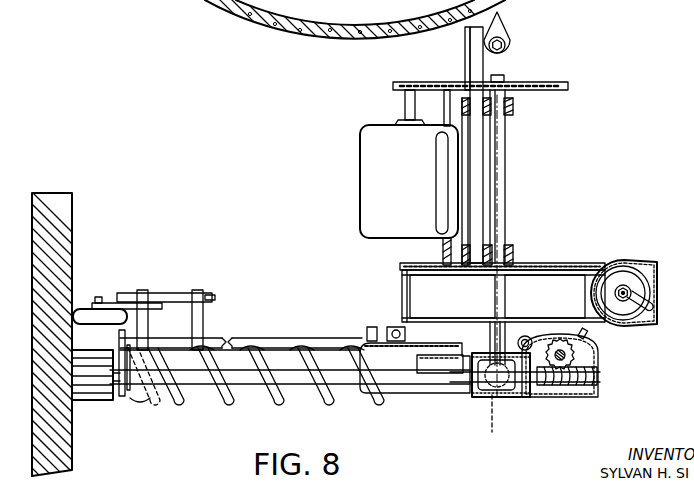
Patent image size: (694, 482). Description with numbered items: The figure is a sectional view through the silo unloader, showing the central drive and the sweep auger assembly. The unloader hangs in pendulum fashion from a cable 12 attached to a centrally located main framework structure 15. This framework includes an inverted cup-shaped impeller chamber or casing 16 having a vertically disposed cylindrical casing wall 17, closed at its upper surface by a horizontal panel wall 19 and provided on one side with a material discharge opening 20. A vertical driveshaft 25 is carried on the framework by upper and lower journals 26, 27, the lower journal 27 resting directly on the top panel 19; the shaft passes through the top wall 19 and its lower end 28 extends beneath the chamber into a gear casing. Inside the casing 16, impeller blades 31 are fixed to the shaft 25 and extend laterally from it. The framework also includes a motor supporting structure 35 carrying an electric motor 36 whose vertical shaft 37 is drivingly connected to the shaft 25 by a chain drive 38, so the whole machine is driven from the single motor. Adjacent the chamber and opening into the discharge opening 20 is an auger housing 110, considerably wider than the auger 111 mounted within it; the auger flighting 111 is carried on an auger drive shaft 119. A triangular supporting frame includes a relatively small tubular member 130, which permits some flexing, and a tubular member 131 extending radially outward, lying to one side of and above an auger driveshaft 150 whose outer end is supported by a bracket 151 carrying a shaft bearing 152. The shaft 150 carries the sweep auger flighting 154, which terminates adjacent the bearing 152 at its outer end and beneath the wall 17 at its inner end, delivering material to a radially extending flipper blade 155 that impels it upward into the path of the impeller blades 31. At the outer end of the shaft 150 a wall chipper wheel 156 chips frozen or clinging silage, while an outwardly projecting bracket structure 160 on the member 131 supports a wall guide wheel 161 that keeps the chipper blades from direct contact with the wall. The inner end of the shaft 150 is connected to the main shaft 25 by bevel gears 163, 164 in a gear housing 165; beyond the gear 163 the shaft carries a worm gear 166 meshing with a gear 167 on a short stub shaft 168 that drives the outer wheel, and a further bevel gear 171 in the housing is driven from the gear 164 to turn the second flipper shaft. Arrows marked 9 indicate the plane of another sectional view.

The section line 9- 9 is at (485, 237).
The cable 12 is at (503, 18).
The main framework structure 15 is at (482, 67).
The impeller chamber 16 is at (558, 258).
The cylindrical casing wall 17 is at (404, 302).
The panel wall 19 is at (425, 264).
The material discharge opening 20 is at (593, 300).
The driveshaft 25 is at (498, 170).
The upper journal 26 is at (514, 108).
The lower journal 27 is at (514, 256).
The lower end of the shaft 28 is at (493, 336).
The impeller blades 31 is at (420, 283).
The motor supporting structure 35 is at (449, 105).
The electric motor 36 is at (372, 170).
The vertical shaft 37 is at (406, 103).
The chain drive 38 is at (442, 83).
The auger housing 110 is at (658, 295).
The auger 111 is at (637, 285).
The auger drive shaft 119 is at (638, 306).
The tubular member 130 is at (525, 336).
The tubular member 131 is at (273, 347).
The auger driveshaft 150 is at (478, 384).
The bracket 151 is at (121, 344).
The shaft bearing 152 is at (128, 374).
The auger flighting 154 is at (278, 400).
The flipper blade 155 is at (437, 366).
The wall chipper wheel 156 is at (95, 401).
The bracket structure 160 is at (172, 298).
The wall guide wheel 161 is at (80, 309).
The bevel gear 163 is at (508, 394).
The bevel gear 164 is at (484, 398).
The gear housing 165 is at (553, 394).
The worm gear 166 is at (581, 381).
The gear 167 is at (574, 356).
The stub shaft 168 is at (586, 336).
The bevel gear 171 is at (502, 424).